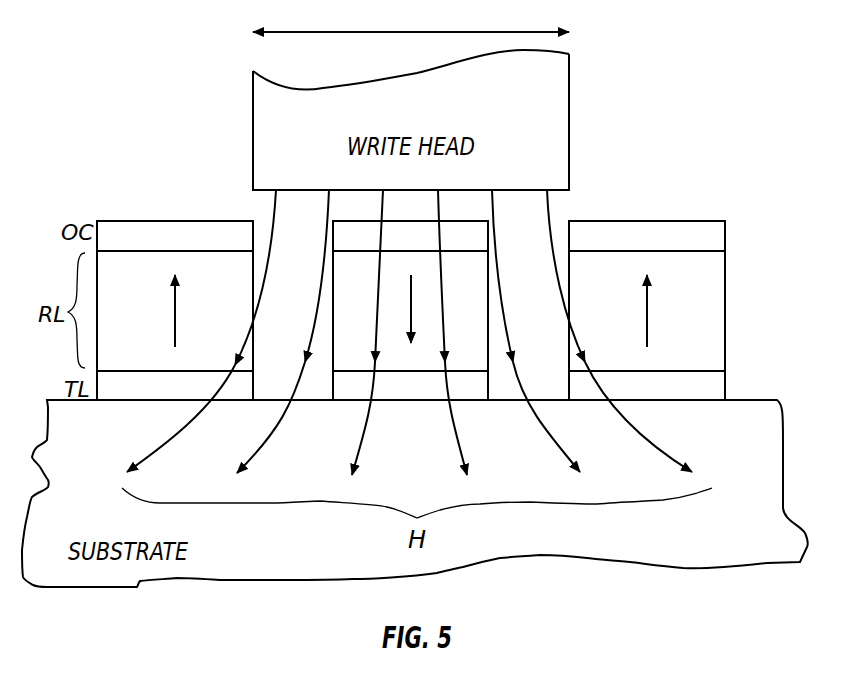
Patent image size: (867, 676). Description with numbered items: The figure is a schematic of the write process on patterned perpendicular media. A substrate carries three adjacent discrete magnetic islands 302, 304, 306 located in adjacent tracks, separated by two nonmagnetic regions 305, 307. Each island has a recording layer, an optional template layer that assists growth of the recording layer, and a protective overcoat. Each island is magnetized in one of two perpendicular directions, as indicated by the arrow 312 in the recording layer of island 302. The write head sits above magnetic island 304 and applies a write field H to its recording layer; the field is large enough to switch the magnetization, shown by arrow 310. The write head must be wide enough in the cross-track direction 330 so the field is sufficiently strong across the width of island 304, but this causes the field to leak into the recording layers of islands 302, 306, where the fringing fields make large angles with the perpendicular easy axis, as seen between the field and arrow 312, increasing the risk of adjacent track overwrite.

The cross-track direction 330 is at (497, 32).
The discrete magnetic island 302 is at (175, 220).
The discrete magnetic island 304 is at (479, 220).
The discrete magnetic island 306 is at (691, 219).
The nonmagnetic region 305 is at (263, 235).
The nonmagnetic region 307 is at (557, 219).
The arrow indicating switching of magnetization 310 is at (412, 324).
The arrow indicating magnetization 312 is at (173, 325).